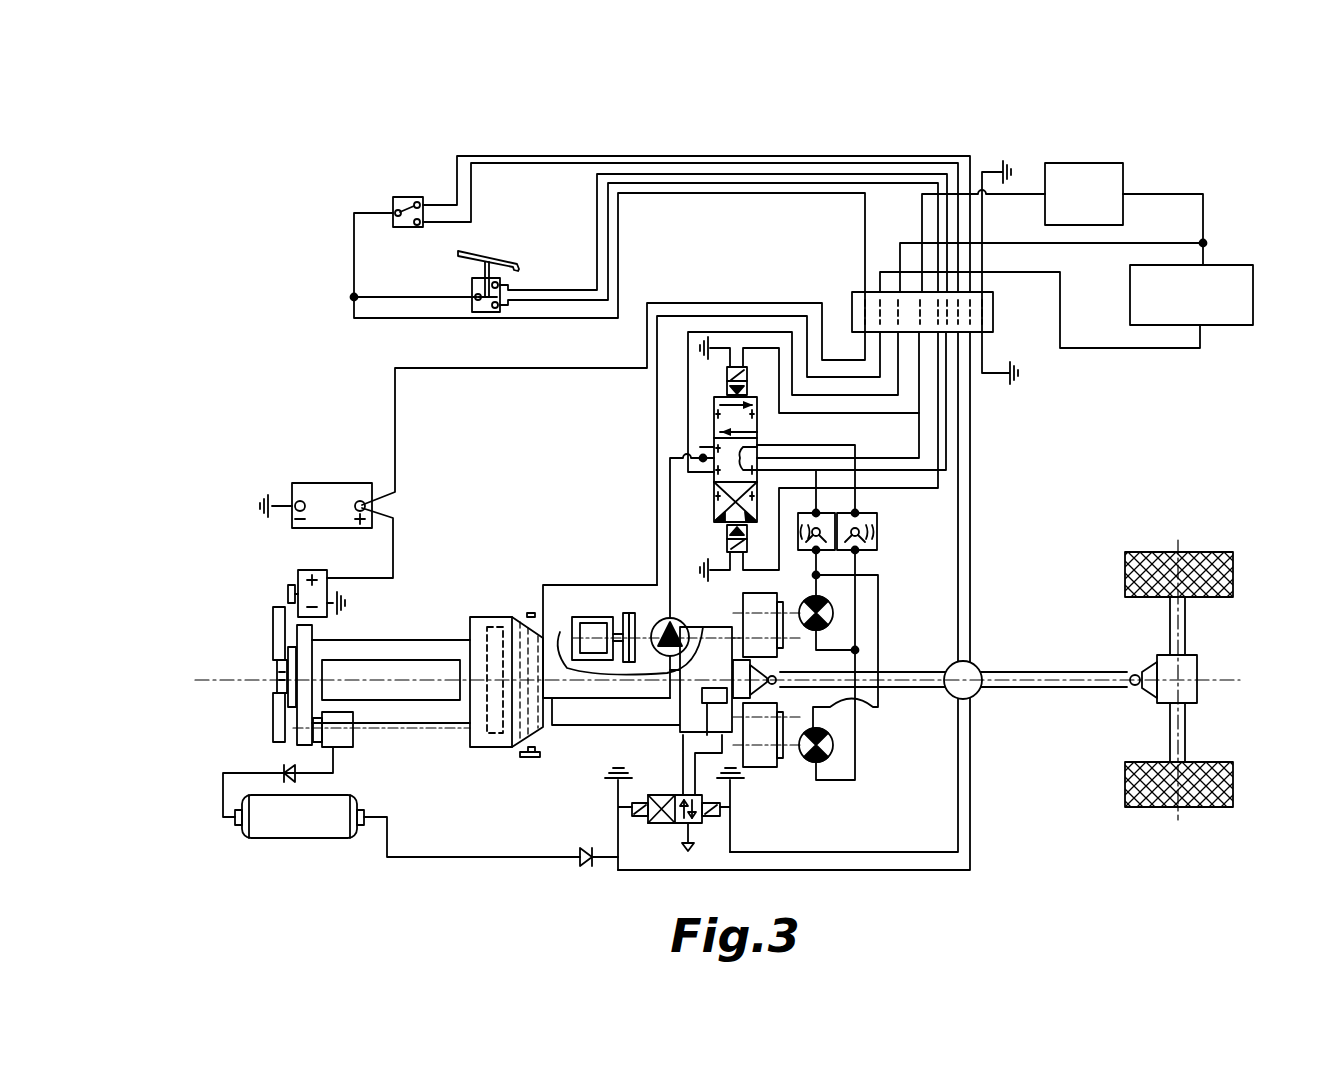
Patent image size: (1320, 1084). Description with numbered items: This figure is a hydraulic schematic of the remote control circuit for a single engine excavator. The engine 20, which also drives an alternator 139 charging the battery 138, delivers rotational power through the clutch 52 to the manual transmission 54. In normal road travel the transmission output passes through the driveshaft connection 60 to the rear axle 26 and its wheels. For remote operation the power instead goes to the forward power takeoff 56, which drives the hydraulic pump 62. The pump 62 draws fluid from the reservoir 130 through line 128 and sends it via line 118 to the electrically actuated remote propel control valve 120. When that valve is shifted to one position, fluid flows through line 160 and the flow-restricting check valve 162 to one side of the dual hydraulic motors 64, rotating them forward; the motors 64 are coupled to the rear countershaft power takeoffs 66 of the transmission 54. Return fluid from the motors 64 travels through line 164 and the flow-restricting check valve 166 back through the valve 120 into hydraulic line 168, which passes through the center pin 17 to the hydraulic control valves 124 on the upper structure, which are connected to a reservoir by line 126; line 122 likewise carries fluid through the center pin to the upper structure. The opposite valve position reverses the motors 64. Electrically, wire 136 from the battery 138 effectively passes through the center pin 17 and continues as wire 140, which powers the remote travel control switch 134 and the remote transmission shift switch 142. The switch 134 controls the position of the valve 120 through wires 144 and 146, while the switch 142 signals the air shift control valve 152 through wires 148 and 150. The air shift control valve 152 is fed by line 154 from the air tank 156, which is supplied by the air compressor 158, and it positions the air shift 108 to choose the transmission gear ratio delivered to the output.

The center pin 17 is at (997, 310).
The engine 20 is at (418, 634).
The rear axle 26 is at (1195, 625).
The clutch 52 is at (495, 620).
The manual transmission 54 is at (593, 730).
The forward power takeoff 56 is at (585, 612).
The driveshaft connection 60 is at (1020, 668).
The hydraulic pump 62 is at (655, 612).
The hydraulic motors 64 is at (840, 608).
The rear countershaft power takeoffs 66 is at (737, 600).
The air shift 108 is at (702, 704).
The line 118 is at (668, 505).
The remote propel control valve 120 is at (710, 428).
The line 122 is at (880, 458).
The hydraulic control valves 124 is at (1088, 158).
The line 126 is at (1177, 192).
The line 128 is at (669, 456).
The reservoir 130 is at (1217, 265).
The remote travel control switch 134 is at (455, 268).
The wire 136 is at (413, 368).
The battery 138 is at (337, 482).
The alternator 139 is at (272, 593).
The wire 140 is at (365, 322).
The remote transmission shift switch 142 is at (393, 192).
The wire 144 is at (540, 290).
The wire 146 is at (563, 301).
The wire 148 is at (500, 165).
The wire 150 is at (535, 154).
The air shift control valve 152 is at (738, 810).
The line 154 is at (455, 858).
The air tank 156 is at (262, 840).
The air compressor 158 is at (357, 750).
The line 160 is at (800, 447).
The flow-restricting check valve 162 is at (888, 517).
The line 164 is at (875, 704).
The flow-restricting check valve 166 is at (806, 503).
The hydraulic line 168 is at (684, 358).